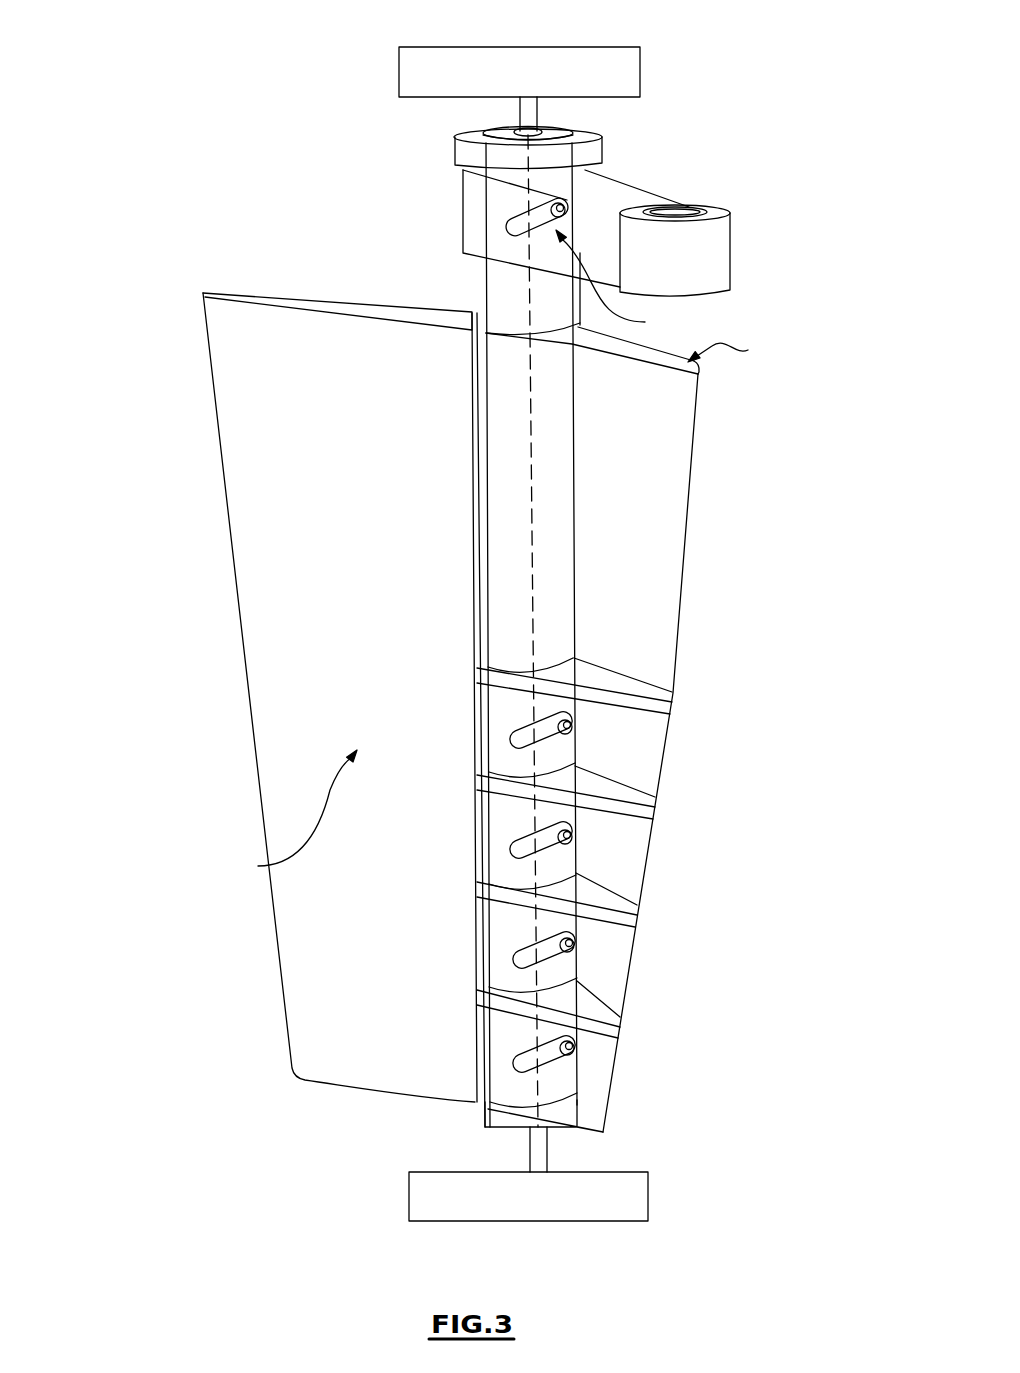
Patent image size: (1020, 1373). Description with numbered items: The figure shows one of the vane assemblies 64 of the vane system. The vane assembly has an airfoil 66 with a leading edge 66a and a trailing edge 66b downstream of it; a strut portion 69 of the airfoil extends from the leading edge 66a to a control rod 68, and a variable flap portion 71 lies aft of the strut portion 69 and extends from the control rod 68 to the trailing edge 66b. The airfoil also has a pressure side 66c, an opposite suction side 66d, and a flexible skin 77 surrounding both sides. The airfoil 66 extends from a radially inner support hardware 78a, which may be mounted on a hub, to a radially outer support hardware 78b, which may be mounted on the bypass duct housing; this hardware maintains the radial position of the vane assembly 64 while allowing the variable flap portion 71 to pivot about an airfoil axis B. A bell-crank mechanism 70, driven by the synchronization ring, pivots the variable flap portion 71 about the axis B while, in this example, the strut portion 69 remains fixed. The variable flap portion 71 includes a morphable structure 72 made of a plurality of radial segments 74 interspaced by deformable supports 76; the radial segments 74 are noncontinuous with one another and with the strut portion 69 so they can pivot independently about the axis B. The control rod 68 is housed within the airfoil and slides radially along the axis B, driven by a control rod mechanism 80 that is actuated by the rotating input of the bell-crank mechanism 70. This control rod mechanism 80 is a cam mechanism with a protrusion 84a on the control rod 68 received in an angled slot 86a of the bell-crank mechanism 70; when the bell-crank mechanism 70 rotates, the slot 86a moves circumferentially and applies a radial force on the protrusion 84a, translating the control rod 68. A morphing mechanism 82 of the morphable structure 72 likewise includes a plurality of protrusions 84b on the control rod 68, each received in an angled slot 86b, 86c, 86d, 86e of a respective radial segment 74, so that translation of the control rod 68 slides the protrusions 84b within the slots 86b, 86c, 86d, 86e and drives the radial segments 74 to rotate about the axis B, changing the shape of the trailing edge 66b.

The vane assembly 64 is at (137, 236).
The airfoil 66 is at (469, 694).
The leading edge 66a is at (236, 627).
The trailing edge 66b is at (687, 650).
The pressure side 66c is at (283, 816).
The suction side 66d is at (743, 356).
The control rod 68 is at (473, 295).
The strut portion 69 is at (241, 448).
The bell-crank mechanism 70 is at (657, 196).
The variable flap portion 71 is at (682, 447).
The morphable structure 72 is at (603, 895).
The radial segments 74 is at (667, 758).
The deformable supports 76 is at (668, 705).
The flexible skin 77 is at (630, 578).
The radially inner support hardware 78a is at (627, 1222).
The radially outer support hardware 78b is at (545, 47).
The control rod mechanism 80 is at (617, 284).
The morphing mechanism 82 is at (510, 1044).
The protrusion 84a is at (575, 216).
The protrusions 84b is at (572, 729).
The slot 86a is at (510, 226).
The slot 86b is at (543, 740).
The slot 86c is at (543, 850).
The slot 86d is at (547, 962).
The slot 86e is at (547, 1067).
The airfoil axis B is at (532, 528).